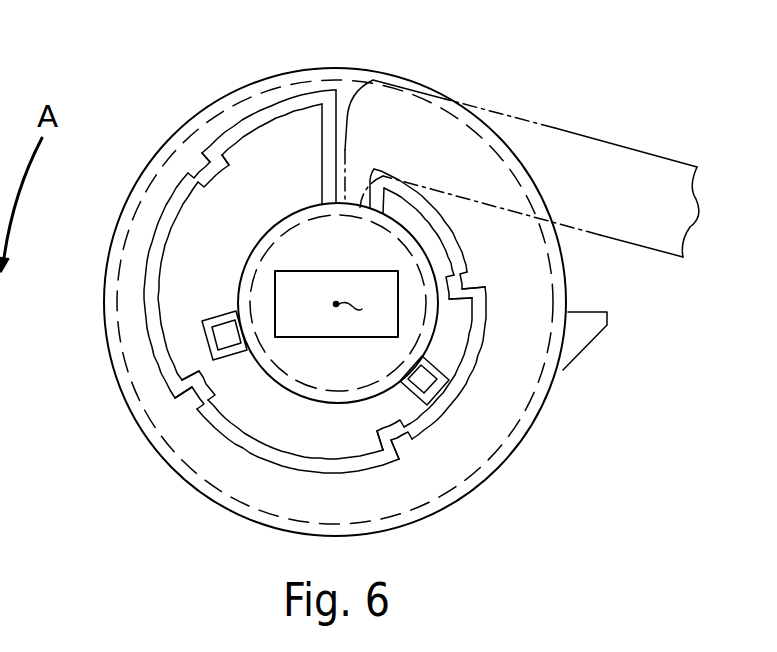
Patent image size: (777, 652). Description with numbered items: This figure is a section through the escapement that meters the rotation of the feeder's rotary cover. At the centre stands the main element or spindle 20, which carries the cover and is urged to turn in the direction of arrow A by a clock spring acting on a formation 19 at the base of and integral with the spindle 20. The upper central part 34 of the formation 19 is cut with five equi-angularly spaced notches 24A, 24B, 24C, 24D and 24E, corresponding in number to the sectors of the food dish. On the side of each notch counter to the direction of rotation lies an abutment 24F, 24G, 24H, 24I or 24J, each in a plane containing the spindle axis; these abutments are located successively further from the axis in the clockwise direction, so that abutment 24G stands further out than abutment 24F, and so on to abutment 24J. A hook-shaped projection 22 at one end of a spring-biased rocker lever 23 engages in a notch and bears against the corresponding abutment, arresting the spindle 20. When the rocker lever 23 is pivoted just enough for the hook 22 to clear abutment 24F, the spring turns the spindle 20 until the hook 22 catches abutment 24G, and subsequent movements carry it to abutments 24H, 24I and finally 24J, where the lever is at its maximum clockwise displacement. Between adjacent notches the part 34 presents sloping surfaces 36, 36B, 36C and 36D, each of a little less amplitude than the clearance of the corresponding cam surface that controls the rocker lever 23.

The formation 19 is at (515, 455).
The main element or spindle 20 is at (240, 266).
The hook-shaped projection 22 is at (347, 198).
The rocker lever 23 is at (603, 150).
The notch 24A is at (334, 190).
The notch 24B is at (463, 293).
The notch 24C is at (394, 452).
The notch 24D is at (205, 412).
The notch 24E is at (177, 192).
The abutment 24F is at (368, 186).
The abutment 24G is at (485, 292).
The abutment 24H is at (390, 460).
The abutment 24I is at (195, 410).
The abutment 24J is at (163, 170).
The upper central part 34 is at (267, 123).
The sloping surface 36 is at (450, 239).
The sloping surface 36B is at (452, 412).
The sloping surface 36C is at (312, 476).
The sloping surface 36D is at (150, 358).